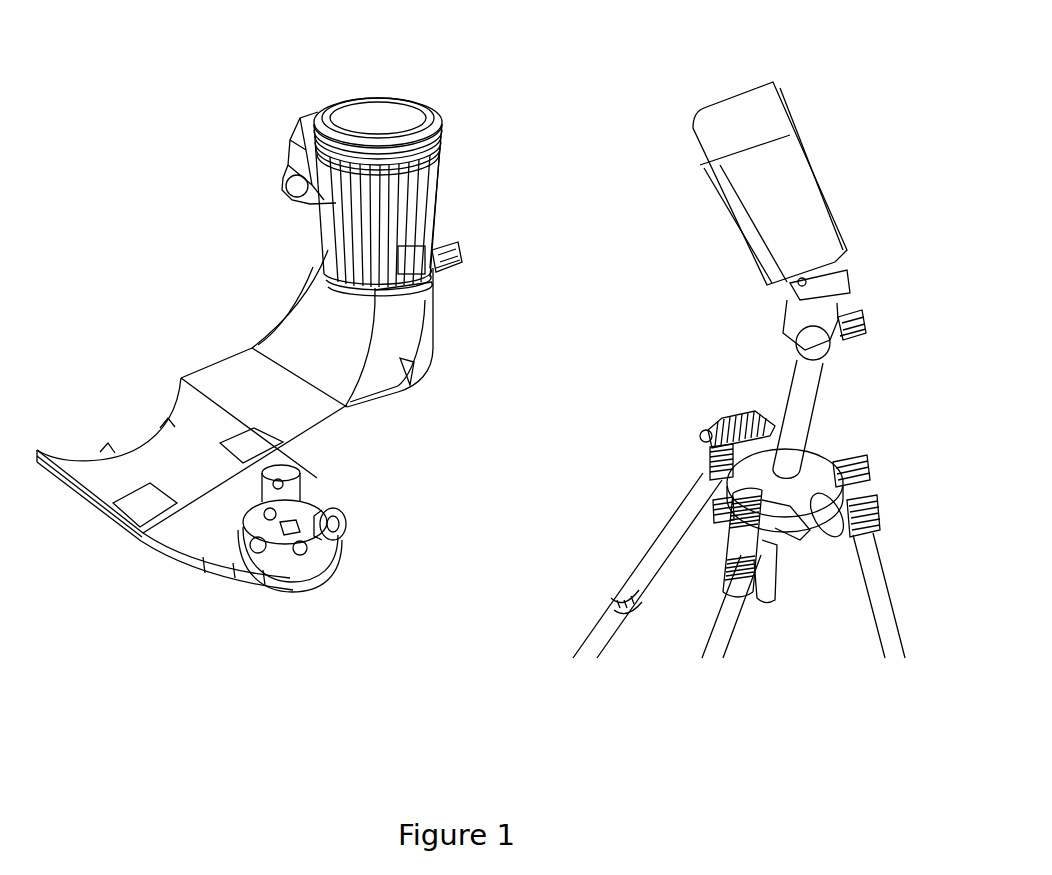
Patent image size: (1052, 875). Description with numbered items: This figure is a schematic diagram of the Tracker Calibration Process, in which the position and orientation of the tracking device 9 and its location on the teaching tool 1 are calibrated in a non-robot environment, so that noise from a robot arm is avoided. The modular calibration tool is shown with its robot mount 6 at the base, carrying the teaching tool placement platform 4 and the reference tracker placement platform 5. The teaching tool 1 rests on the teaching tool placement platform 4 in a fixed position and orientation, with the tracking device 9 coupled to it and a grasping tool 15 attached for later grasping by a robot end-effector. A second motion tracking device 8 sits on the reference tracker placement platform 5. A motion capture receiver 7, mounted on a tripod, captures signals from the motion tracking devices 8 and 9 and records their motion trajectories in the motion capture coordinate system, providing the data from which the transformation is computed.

The teaching tool 1 is at (445, 157).
The teaching tool placement platform 4 is at (440, 325).
The reference tracker placement platform 5 is at (318, 480).
The robot mount 6 is at (155, 443).
The motion capture receiver 7 is at (830, 192).
The motion tracking device 8 is at (338, 530).
The tracking device 9 is at (302, 168).
The grasping tool 15 is at (447, 245).